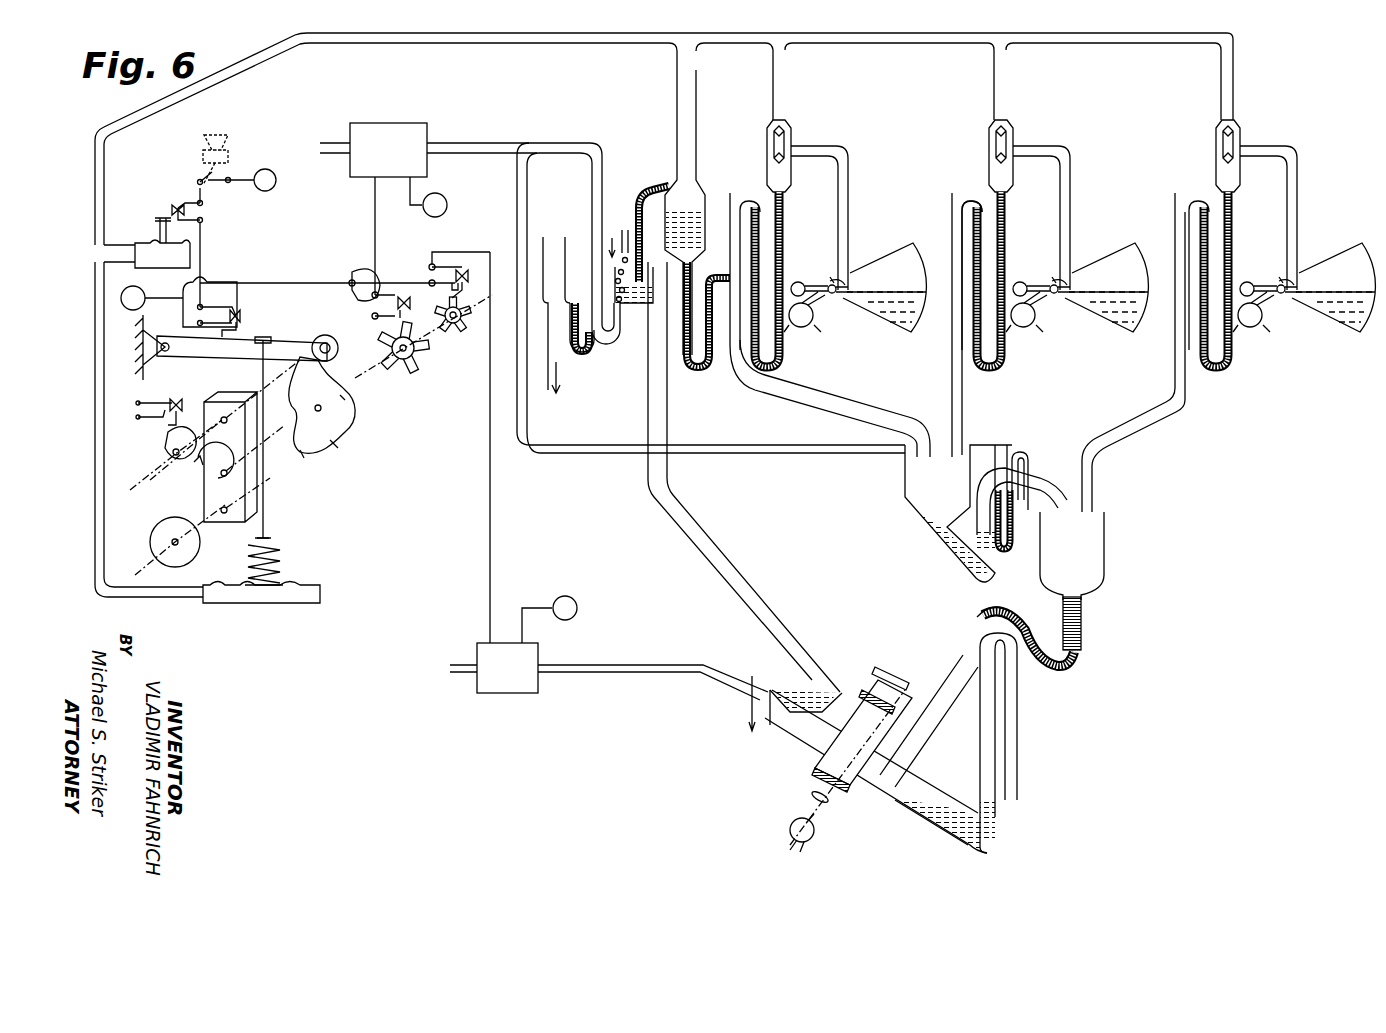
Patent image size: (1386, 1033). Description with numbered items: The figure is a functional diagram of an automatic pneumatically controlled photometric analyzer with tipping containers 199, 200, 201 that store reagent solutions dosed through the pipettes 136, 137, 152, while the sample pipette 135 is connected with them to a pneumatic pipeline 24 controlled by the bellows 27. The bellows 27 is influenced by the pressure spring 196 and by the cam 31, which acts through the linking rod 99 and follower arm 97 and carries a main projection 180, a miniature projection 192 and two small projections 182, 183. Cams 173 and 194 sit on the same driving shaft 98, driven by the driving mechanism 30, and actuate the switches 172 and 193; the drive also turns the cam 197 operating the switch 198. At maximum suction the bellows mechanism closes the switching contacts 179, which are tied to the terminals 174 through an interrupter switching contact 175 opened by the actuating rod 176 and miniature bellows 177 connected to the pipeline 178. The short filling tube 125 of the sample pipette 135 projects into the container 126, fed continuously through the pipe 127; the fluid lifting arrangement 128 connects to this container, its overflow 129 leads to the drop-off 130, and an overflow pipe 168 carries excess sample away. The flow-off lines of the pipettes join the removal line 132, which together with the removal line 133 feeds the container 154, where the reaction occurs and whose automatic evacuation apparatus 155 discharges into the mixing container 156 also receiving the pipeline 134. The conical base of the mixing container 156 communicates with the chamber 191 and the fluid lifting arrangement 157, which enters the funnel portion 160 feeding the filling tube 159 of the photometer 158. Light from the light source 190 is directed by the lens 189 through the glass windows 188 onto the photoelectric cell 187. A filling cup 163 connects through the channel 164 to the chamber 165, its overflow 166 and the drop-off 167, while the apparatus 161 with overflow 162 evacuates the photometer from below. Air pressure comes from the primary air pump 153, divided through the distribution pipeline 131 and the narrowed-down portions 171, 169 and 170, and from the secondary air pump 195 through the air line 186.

The pneumatic pipeline 24 is at (522, 45).
The bellows 27 is at (320, 595).
The driving mechanism 30 is at (152, 540).
The cam 31 is at (345, 448).
The follower arm 97 is at (292, 342).
The driving shaft 98 is at (280, 440).
The linking rod 99 is at (266, 512).
The filling tube 125 is at (652, 185).
The container 126 is at (630, 305).
The pipe 127 is at (624, 228).
The fluid lifting arrangement 128 is at (592, 352).
The overflow 129 is at (562, 300).
The drop-off 130 is at (550, 382).
The distribution pipeline 131 is at (565, 447).
The removal line 132 is at (785, 385).
The removal line 133 is at (950, 400).
The pipeline 134 is at (1134, 415).
The sample pipette 135 is at (698, 100).
The pipette 136 is at (767, 142).
The pipette 137 is at (989, 138).
The pipette 152 is at (1242, 135).
The primary air pump 153 is at (428, 209).
The container 154 is at (905, 480).
The pneumatic automatic evacuation apparatus 155 is at (1000, 460).
The mixing container 156 is at (1100, 543).
The fluid lifting arrangement 157 is at (1080, 660).
The photometer 158 is at (855, 780).
The filling tube 159 is at (925, 722).
The funnel portion 160 is at (965, 610).
The apparatus for automatically evacuating 161 is at (975, 790).
The overflow 162 is at (1008, 675).
The filling cup 163 is at (780, 640).
The channel 164 is at (805, 720).
The chamber 165 is at (788, 690).
The overflow 166 is at (765, 690).
The drop-off 167 is at (750, 732).
The overflow pipe 168 is at (648, 400).
The narrowed-down portion 169 is at (1024, 452).
The narrowed-down portion 170 is at (1032, 495).
The narrowed-down portion 171 is at (592, 181).
The switch 172 is at (362, 275).
The cam 173 is at (400, 372).
The terminals 174 is at (224, 175).
The interrupter switching contact 175 is at (205, 213).
The actuating rod 176 is at (155, 240).
The miniature bellows 177 is at (162, 268).
The pipeline 178 is at (122, 246).
The switching contacts 179 is at (240, 316).
The main projection 180 is at (306, 452).
The small projection 182 is at (340, 352).
The small projection 183 is at (288, 396).
The air line 186 is at (645, 673).
The photoelectric cell 187 is at (890, 662).
The glass windows 188 is at (900, 695).
The lens 189 is at (808, 797).
The light source 190 is at (810, 838).
The chamber 191 is at (1082, 600).
The miniature projection 192 is at (350, 405).
The switch 193 is at (430, 268).
The cam 194 is at (460, 328).
The secondary air pump 195 is at (527, 472).
The pressure spring 196 is at (282, 560).
The cam 197 is at (165, 442).
The switch 198 is at (136, 405).
The tipping container 199 is at (872, 320).
The tipping container 200 is at (1100, 320).
The tipping container 201 is at (1327, 320).